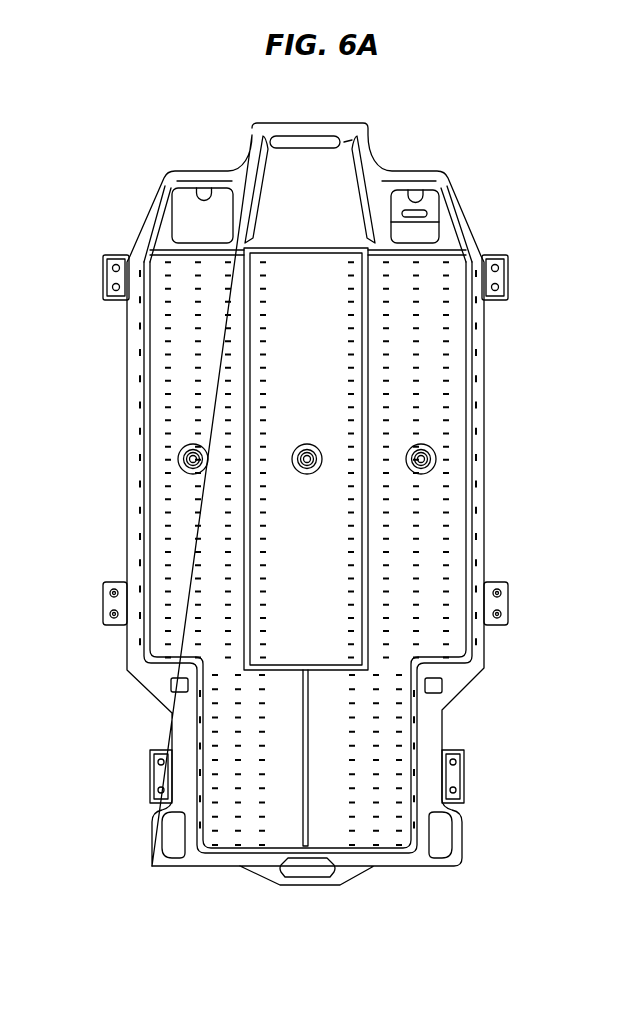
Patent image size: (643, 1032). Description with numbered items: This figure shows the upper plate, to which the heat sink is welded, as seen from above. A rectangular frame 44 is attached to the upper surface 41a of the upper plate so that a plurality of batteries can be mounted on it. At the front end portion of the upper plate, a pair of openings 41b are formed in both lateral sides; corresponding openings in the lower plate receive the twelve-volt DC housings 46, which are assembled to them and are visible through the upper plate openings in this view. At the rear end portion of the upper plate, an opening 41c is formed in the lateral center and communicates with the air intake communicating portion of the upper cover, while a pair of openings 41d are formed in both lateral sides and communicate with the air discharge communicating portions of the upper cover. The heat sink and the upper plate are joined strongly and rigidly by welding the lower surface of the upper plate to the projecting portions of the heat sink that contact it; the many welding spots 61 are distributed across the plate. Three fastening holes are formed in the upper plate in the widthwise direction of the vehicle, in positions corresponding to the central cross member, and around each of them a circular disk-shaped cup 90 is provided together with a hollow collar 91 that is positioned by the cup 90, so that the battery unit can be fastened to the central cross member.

The upper surface 41a is at (428, 548).
The opening 41b is at (211, 197).
The opening 41c is at (307, 878).
The opening 41d is at (163, 835).
The rectangular frame 44 is at (327, 670).
The 12V DC housing 46 is at (192, 223).
The welding spot 61 is at (443, 492).
The cup 90 is at (411, 447).
The hollow collar 91 is at (412, 473).